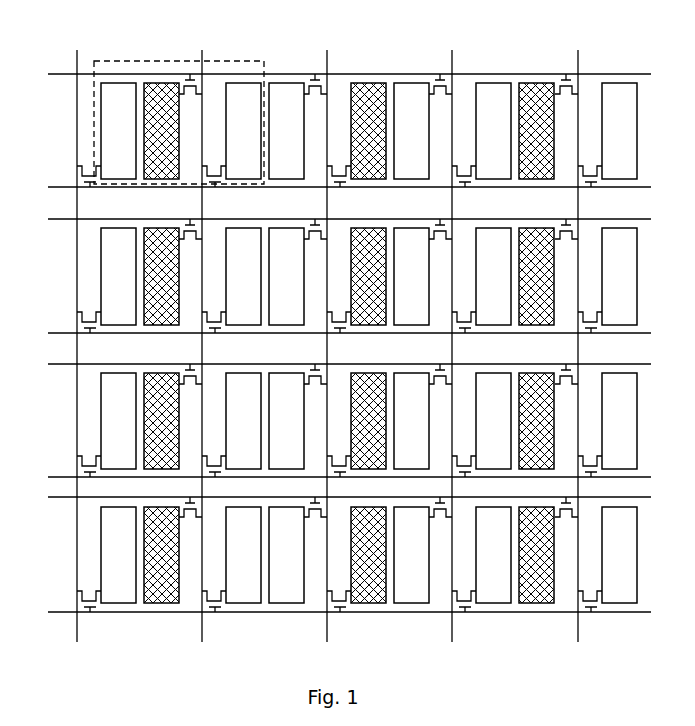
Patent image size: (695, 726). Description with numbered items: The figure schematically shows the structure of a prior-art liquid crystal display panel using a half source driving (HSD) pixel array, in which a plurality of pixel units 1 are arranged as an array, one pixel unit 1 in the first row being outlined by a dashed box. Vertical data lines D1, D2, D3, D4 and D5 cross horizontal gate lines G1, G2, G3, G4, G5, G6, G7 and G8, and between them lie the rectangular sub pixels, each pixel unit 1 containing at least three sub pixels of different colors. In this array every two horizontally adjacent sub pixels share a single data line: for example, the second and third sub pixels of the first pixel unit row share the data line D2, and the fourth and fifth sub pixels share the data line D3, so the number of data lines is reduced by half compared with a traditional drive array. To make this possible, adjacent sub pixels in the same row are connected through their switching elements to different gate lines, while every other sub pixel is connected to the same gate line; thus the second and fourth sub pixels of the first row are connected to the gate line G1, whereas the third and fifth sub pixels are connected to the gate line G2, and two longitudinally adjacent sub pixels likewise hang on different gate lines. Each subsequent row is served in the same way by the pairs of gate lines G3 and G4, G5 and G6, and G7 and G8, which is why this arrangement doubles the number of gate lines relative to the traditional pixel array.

The pixel unit 1 is at (108, 55).
The gate line G1 is at (337, 74).
The gate line G2 is at (337, 187).
The gate line G3 is at (337, 219).
The gate line G4 is at (337, 333).
The gate line G5 is at (337, 364).
The gate line G6 is at (337, 477).
The gate line G7 is at (337, 497).
The gate line G8 is at (337, 612).
The data line D1 is at (77, 337).
The data line D2 is at (202, 337).
The data line D3 is at (327, 337).
The data line D4 is at (452, 337).
The data line D5 is at (578, 337).